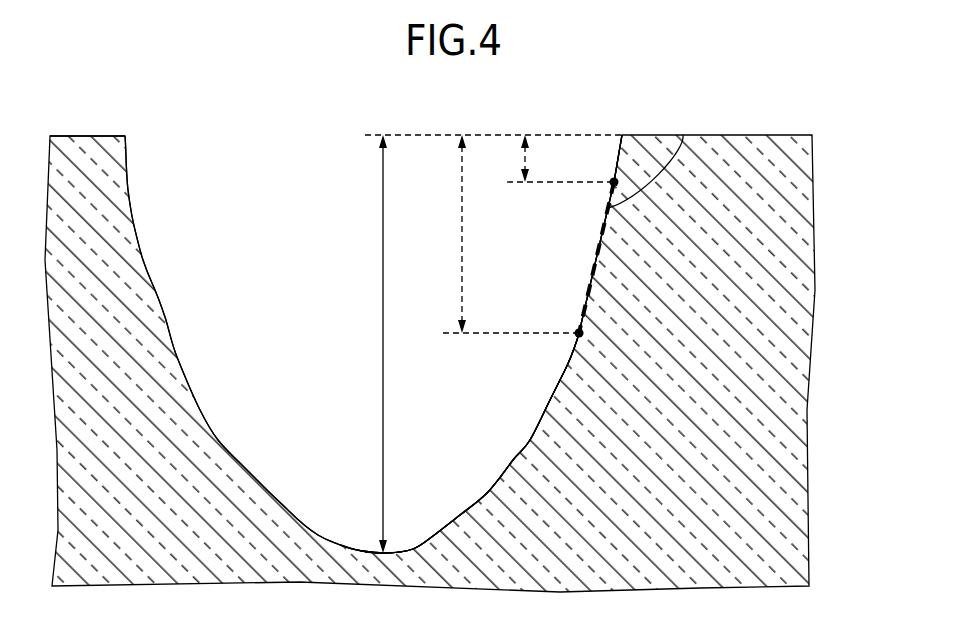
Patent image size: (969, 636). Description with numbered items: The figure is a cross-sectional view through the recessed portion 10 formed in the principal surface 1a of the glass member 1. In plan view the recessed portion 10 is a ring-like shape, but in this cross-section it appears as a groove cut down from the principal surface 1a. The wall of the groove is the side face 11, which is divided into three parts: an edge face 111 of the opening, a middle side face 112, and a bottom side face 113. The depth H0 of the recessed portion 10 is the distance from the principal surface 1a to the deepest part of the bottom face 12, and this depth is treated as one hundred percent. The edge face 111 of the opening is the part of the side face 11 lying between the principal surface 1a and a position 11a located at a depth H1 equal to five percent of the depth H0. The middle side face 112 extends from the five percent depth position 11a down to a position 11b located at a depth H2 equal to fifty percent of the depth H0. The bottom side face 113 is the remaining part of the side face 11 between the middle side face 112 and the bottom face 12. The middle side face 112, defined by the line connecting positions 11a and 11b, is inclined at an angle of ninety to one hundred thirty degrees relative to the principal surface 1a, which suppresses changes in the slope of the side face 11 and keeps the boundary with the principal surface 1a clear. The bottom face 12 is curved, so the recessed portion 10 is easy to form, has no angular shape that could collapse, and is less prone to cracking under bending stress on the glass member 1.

The glass member 1 is at (798, 485).
The principal surface 1a is at (85, 136).
The recessed portion 10 is at (128, 190).
The side face 11 is at (552, 399).
The 5% depth position 11a is at (616, 182).
The 50% depth position 11b is at (584, 332).
The edge face of the opening 111 is at (613, 137).
The middle side face 112 is at (607, 184).
The bottom side face 113 is at (576, 336).
The bottom face 12 is at (403, 552).
The depth H0 is at (482, 344).
The 5% depth H1 is at (550, 158).
The 50% depth H2 is at (500, 234).